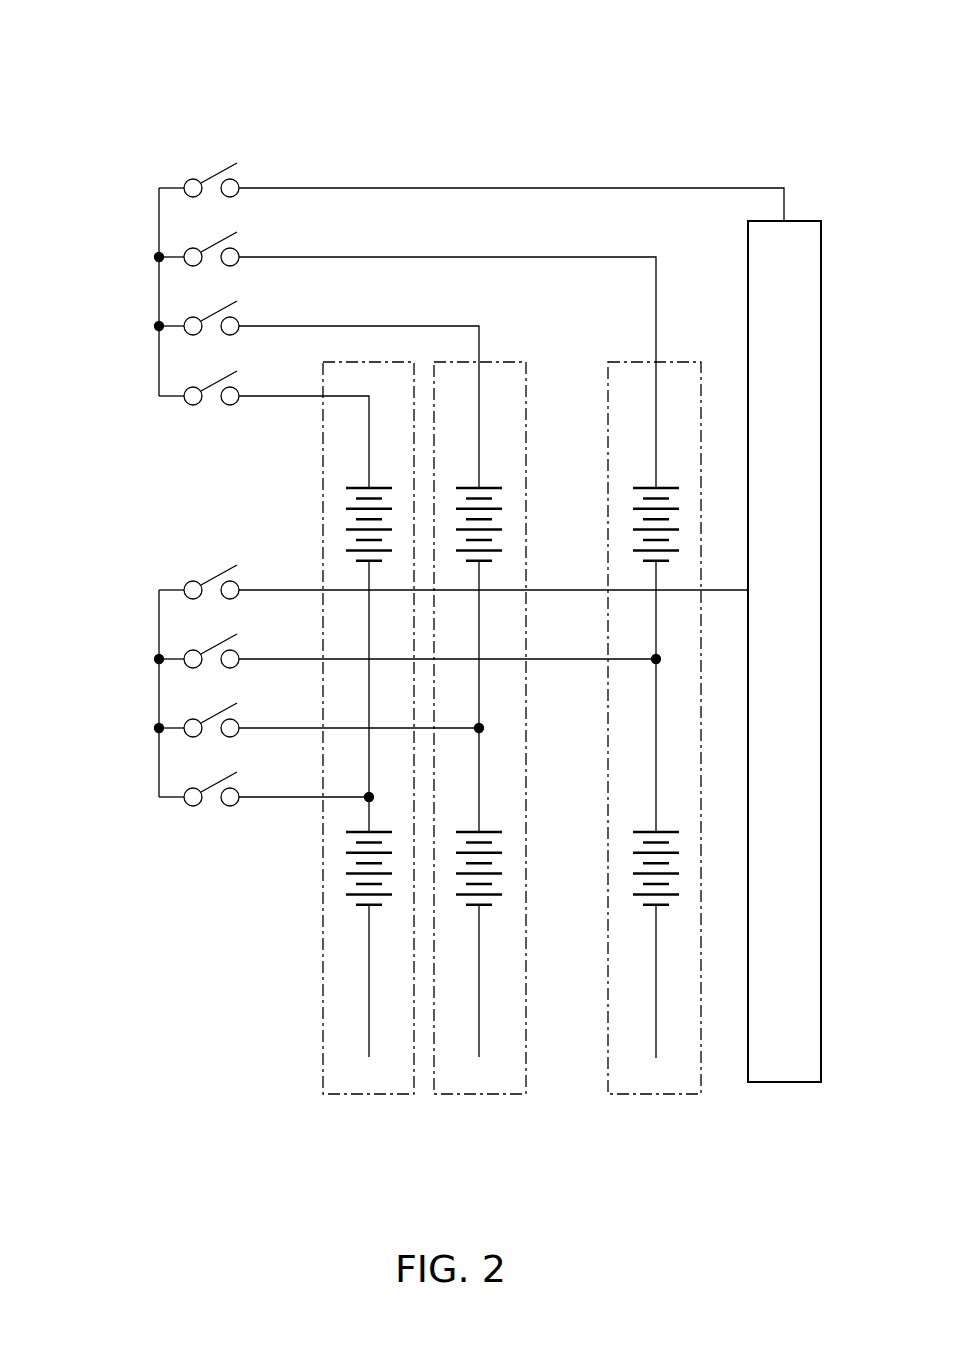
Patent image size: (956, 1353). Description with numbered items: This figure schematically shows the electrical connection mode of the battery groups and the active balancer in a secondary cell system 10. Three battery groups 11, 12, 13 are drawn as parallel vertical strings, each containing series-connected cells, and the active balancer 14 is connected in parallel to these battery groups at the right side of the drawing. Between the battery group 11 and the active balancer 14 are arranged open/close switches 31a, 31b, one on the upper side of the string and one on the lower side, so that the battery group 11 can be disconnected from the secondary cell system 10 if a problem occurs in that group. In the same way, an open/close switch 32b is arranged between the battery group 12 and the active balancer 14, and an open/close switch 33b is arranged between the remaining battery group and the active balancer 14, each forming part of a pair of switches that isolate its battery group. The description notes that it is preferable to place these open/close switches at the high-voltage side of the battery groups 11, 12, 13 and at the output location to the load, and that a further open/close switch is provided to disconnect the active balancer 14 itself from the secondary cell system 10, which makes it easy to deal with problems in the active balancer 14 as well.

The secondary cell system 10 is at (580, 98).
The battery group 11 is at (340, 1095).
The battery group 12 is at (500, 1095).
The battery group 13 is at (680, 1095).
The active balancer 14 is at (800, 558).
The open/close switch 31a is at (192, 806).
The open/close switch 31b is at (190, 404).
The open/close switch 32b is at (187, 334).
The open/close switch 33b is at (187, 265).